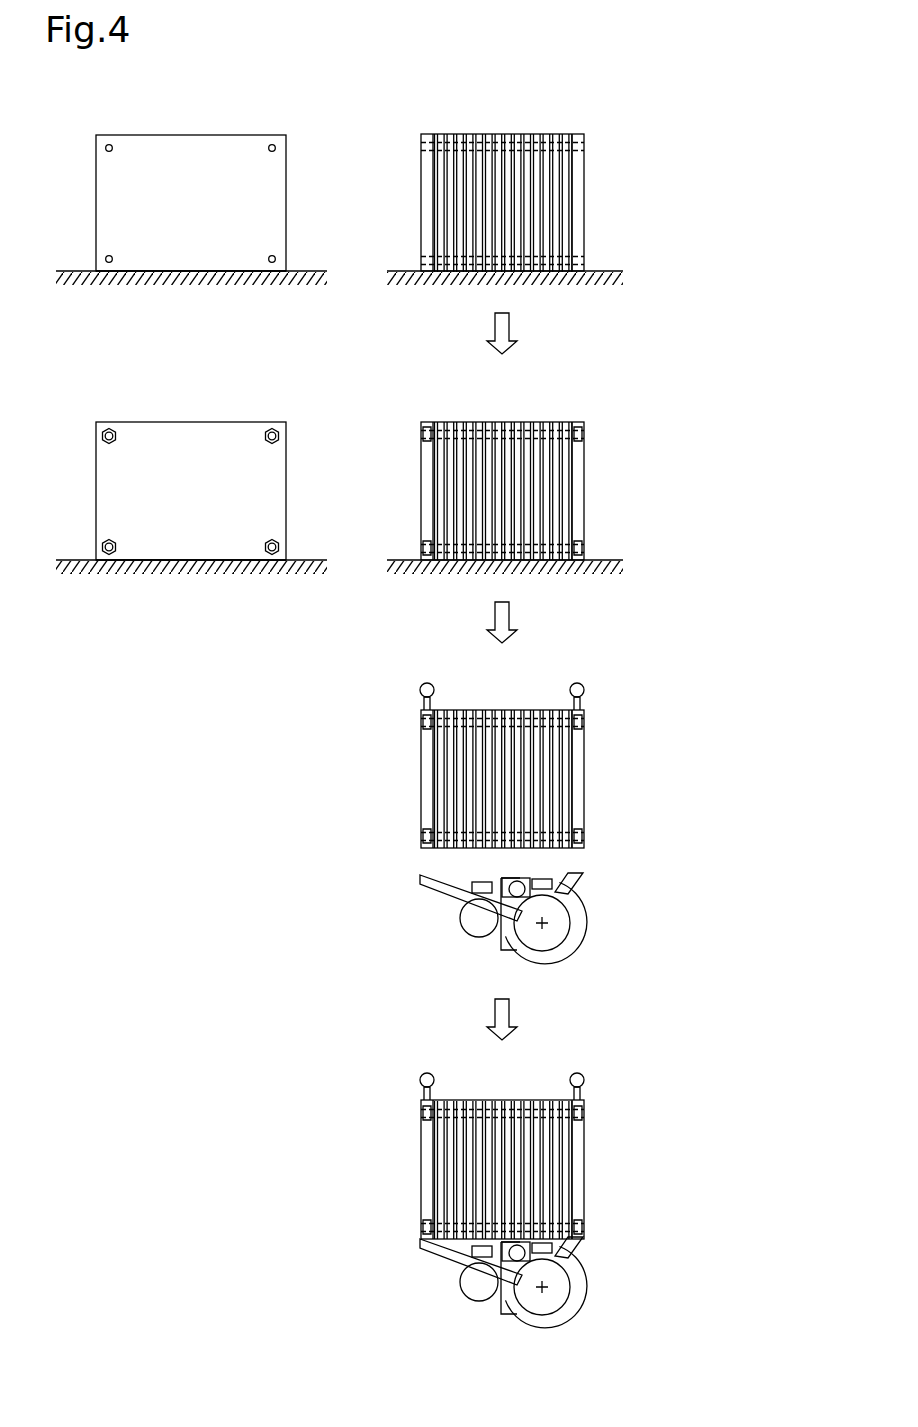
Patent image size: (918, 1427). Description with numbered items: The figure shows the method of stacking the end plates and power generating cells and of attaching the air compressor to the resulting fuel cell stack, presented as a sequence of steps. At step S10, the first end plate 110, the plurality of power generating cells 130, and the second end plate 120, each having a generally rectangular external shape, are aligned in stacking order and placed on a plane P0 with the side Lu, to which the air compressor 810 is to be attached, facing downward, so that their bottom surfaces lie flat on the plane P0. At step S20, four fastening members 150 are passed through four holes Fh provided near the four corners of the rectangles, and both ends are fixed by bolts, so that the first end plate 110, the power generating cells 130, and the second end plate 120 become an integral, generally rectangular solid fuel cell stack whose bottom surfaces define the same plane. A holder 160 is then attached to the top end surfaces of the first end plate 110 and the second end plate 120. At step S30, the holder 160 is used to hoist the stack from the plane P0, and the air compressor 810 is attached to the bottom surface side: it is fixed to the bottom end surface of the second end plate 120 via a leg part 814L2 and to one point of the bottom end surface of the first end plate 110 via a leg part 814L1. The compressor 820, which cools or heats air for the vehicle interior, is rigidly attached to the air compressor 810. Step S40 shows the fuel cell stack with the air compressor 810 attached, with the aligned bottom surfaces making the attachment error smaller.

The first end plate 110 is at (428, 203).
The second end plate 120 is at (136, 202).
The power generating cells 130 is at (572, 127).
The fastening member 150 is at (266, 431).
The holder 160 is at (421, 686).
The air compressor 810 is at (587, 920).
The leg part 814L1 is at (445, 885).
The leg part 814L2 is at (583, 877).
The compressor 820 is at (467, 932).
The holes Fh is at (269, 145).
The side Lu is at (192, 271).
The plane P0 is at (610, 271).
The step S10 is at (730, 143).
The step S20 is at (730, 431).
The step S30 is at (730, 717).
The step S40 is at (730, 1067).